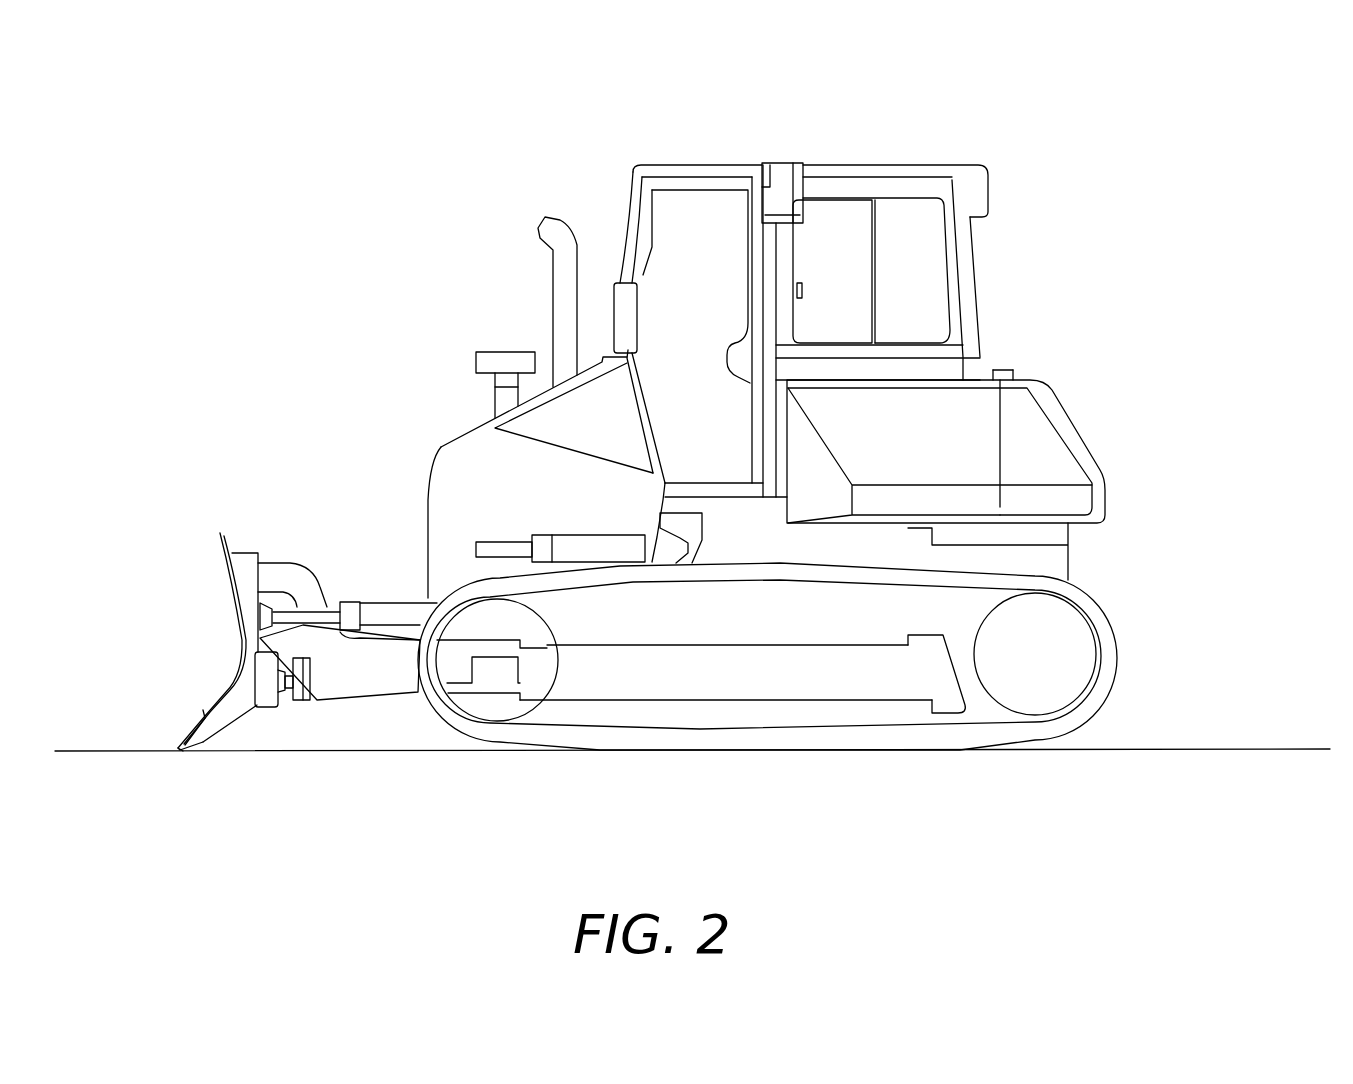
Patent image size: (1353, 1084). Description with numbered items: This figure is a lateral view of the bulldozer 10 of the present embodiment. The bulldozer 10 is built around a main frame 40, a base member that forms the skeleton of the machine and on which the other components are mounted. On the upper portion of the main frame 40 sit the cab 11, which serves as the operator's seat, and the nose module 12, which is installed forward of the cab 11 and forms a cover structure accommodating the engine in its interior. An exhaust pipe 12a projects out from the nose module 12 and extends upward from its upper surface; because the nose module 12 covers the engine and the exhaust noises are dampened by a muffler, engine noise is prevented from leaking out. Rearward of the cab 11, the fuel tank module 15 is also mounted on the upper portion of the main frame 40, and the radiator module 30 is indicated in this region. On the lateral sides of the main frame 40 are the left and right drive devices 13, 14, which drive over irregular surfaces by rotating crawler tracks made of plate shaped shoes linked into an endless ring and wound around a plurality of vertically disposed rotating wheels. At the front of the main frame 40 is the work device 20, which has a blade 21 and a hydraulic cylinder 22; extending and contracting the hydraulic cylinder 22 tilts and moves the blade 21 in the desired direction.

The bulldozer 10 is at (265, 138).
The cab 11 is at (697, 205).
The nose module 12 is at (460, 445).
The exhaust pipe 12a is at (557, 283).
The drive device 13 is at (752, 766).
The drive device 14 is at (764, 654).
The fuel tank module 15 is at (1080, 452).
The work device 20 is at (189, 470).
The blade 21 is at (227, 717).
The hydraulic cylinder 22 is at (385, 612).
The radiator module 30 is at (1091, 390).
The main frame 40 is at (742, 615).